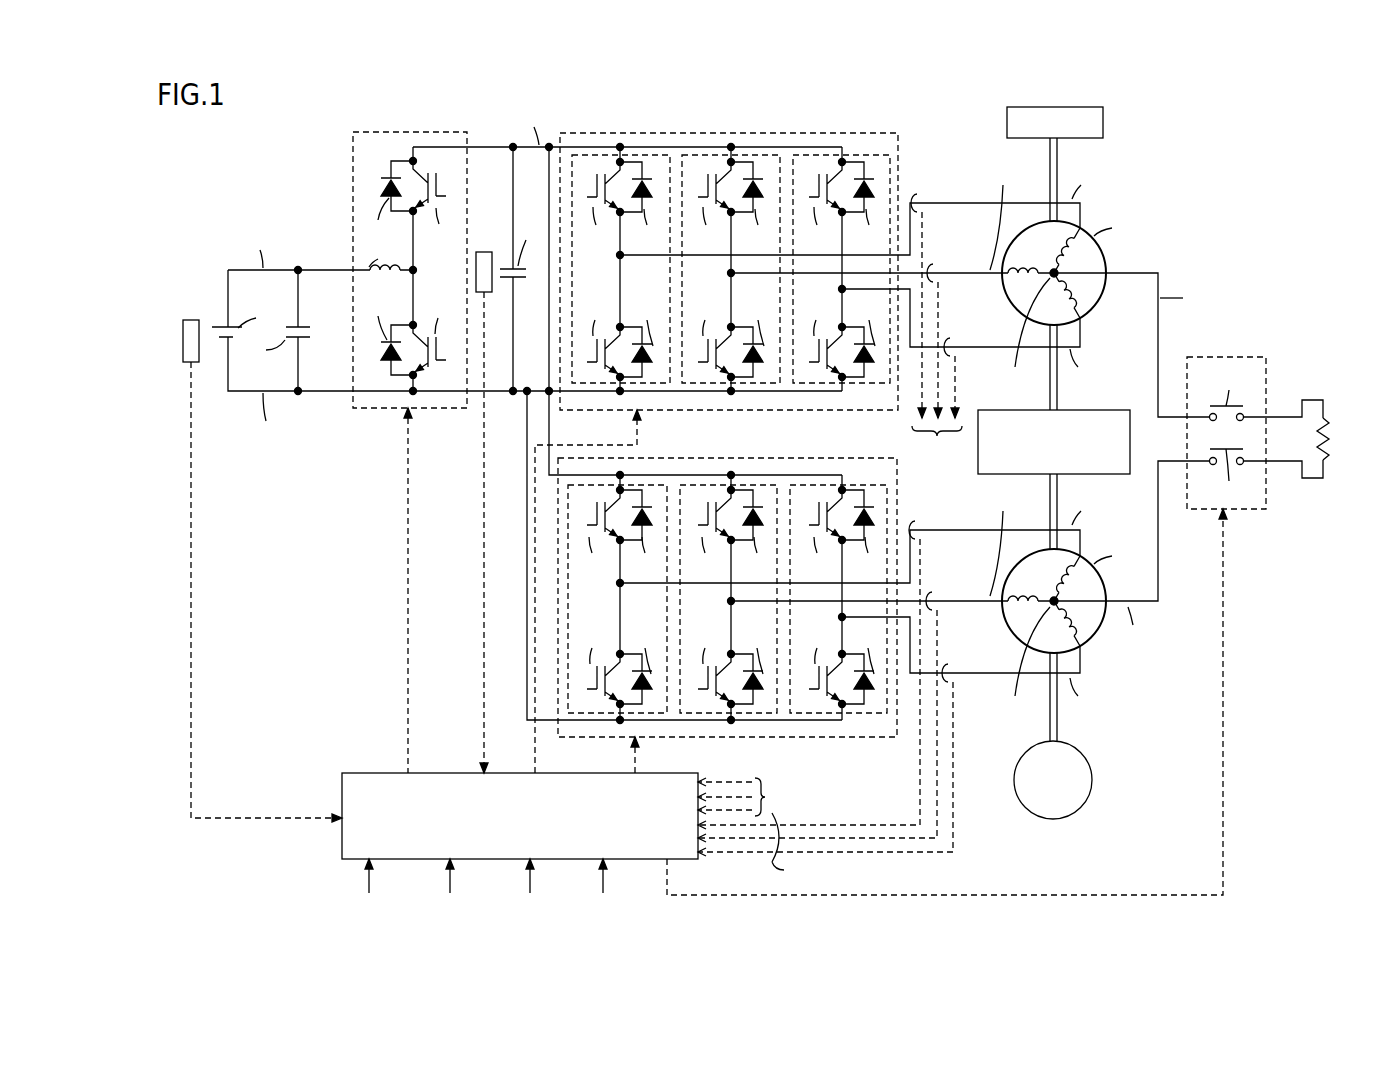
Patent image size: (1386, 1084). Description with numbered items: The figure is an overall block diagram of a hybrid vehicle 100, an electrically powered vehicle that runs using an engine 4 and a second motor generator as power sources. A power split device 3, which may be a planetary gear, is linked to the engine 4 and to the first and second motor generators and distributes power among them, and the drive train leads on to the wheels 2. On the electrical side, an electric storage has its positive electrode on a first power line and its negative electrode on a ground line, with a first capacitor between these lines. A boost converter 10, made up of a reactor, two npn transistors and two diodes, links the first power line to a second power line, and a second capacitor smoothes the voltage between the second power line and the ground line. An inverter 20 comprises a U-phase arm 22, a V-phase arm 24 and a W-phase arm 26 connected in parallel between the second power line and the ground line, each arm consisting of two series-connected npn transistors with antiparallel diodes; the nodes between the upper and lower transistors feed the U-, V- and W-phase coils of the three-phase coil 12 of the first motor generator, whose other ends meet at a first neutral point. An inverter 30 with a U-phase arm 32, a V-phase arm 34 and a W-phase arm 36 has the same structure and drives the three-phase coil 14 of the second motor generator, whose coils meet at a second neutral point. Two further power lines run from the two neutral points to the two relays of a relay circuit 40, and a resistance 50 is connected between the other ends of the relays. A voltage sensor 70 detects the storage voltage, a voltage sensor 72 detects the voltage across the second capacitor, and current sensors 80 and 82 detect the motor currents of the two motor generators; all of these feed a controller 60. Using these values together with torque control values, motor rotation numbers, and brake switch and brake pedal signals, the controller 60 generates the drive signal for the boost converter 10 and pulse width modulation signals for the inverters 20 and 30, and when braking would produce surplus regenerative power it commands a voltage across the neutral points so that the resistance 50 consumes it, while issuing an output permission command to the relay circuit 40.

The hybrid vehicle 100 is at (1317, 136).
The wheels 2 is at (1092, 782).
The power split device 3 is at (1092, 412).
The engine 4 is at (1105, 123).
The boost converter 10 is at (373, 412).
The three-phase coil 12 is at (1044, 249).
The three-phase coil 14 is at (1044, 577).
The inverter 20 is at (729, 270).
The U-phase arm 22 is at (645, 152).
The V-phase arm 24 is at (757, 152).
The W-phase arm 26 is at (867, 152).
The inverter 30 is at (727, 598).
The U-phase arm 32 is at (648, 481).
The V-phase arm 34 is at (755, 481).
The W-phase arm 36 is at (869, 483).
The relay circuit 40 is at (1238, 356).
The resistance 50 is at (1332, 441).
The controller 60 is at (427, 772).
The voltage sensor 70 is at (191, 318).
The voltage sensor 72 is at (485, 250).
The current sensor 80 is at (925, 194).
The current sensor 82 is at (925, 523).